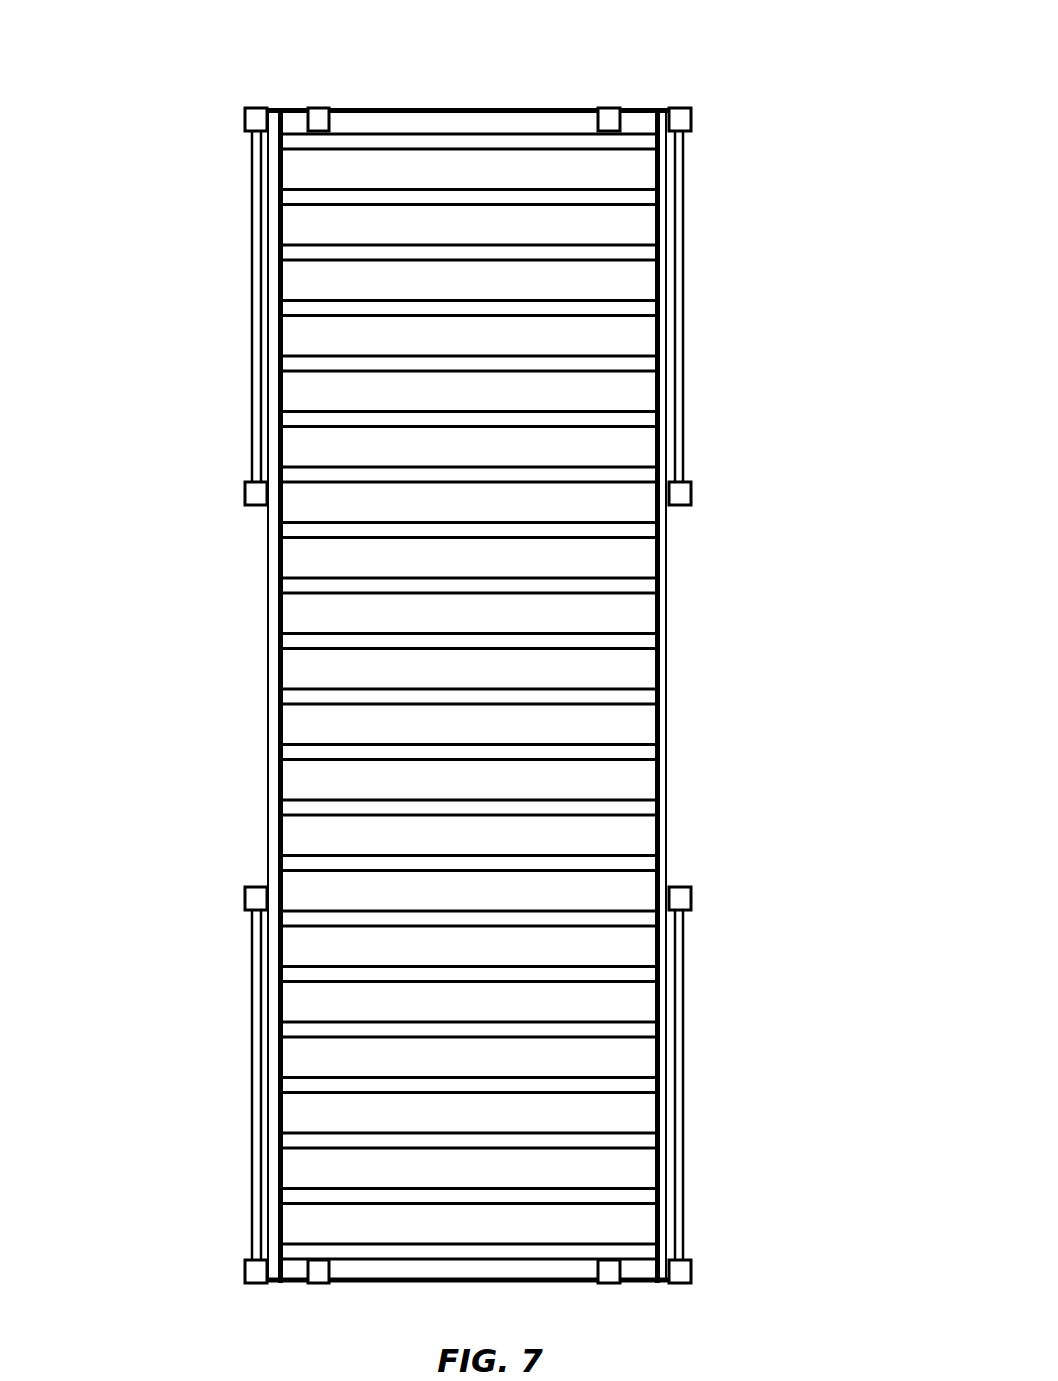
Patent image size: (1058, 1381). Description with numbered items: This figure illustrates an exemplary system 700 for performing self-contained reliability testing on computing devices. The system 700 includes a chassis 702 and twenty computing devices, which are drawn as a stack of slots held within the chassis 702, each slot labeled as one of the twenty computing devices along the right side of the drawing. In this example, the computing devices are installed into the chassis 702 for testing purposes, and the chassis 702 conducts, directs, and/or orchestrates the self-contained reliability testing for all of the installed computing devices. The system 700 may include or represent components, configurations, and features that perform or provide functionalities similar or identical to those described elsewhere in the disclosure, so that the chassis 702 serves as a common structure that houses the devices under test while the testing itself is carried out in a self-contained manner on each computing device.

The system 700 is at (477, 641).
The chassis 702 is at (252, 458).